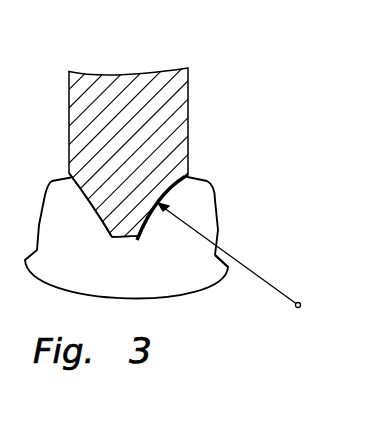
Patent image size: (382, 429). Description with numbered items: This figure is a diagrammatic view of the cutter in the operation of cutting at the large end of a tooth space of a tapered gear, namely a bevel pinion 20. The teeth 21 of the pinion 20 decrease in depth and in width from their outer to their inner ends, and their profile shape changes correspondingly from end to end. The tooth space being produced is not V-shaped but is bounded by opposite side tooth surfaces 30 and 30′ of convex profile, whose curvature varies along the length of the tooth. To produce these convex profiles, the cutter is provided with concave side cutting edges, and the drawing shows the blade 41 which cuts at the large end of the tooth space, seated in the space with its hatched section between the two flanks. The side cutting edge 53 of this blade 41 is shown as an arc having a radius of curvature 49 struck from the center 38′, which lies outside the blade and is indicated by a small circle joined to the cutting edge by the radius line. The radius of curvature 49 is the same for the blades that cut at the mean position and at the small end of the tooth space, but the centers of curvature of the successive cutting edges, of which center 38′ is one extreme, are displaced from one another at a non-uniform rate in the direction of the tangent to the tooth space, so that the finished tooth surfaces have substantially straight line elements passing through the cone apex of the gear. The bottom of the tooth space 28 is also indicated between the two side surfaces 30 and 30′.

The bevel pinion 20 is at (189, 281).
The teeth 21 is at (205, 210).
The slot bottom 28 is at (140, 238).
The side tooth surface 30 is at (171, 183).
The side tooth surface 30′ is at (92, 181).
The blade 41 is at (179, 163).
The radius of curvature 49 is at (221, 252).
The side cutting edge 53 is at (188, 175).
The center of curvature 38′ is at (300, 306).